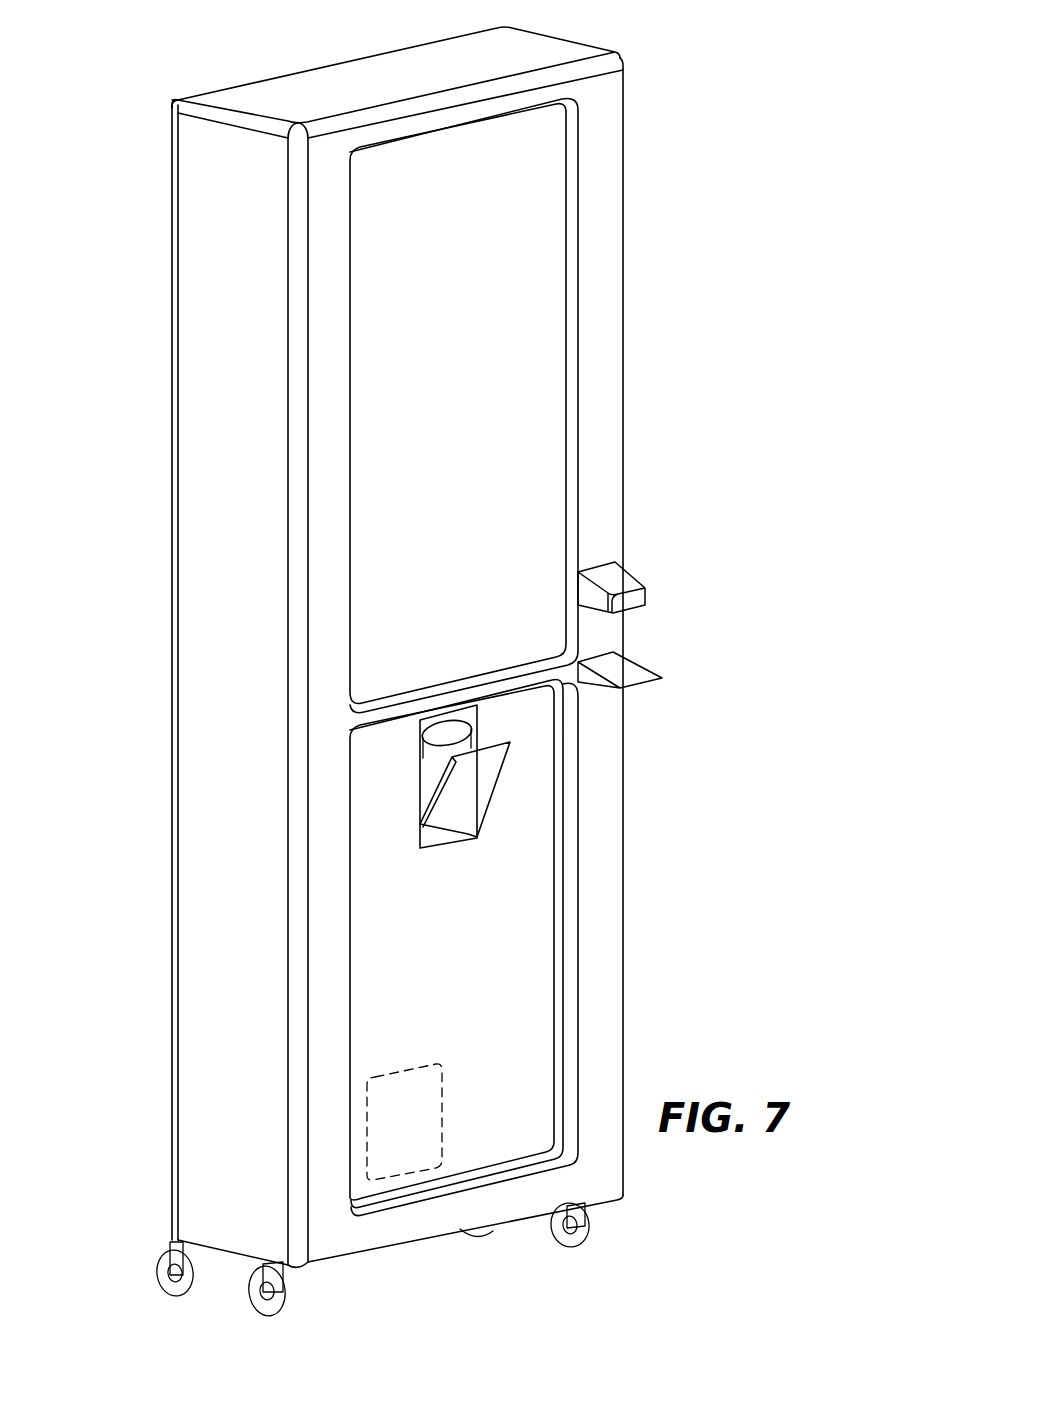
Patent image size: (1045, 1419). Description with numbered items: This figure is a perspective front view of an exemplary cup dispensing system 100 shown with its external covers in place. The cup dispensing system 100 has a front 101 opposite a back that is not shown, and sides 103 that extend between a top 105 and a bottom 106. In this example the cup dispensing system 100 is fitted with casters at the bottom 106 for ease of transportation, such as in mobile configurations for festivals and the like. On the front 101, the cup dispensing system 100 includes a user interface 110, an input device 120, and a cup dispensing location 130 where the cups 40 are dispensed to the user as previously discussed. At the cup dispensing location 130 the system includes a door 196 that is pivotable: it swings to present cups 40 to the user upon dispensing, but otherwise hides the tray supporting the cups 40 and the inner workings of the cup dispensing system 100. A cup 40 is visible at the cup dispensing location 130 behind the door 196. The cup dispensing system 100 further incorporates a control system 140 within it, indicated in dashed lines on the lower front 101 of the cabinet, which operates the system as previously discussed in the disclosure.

The cup dispensing system 100 is at (415, 661).
The top 105 is at (362, 88).
The user interface 110 is at (533, 248).
The input device 120 is at (640, 633).
The cup 40 is at (435, 753).
The cup dispensing location 130 is at (384, 940).
The door 196 is at (457, 805).
The side 103 is at (218, 1003).
The front 101 is at (612, 1028).
The bottom 106 is at (401, 1258).
The control system 140 is at (423, 1137).